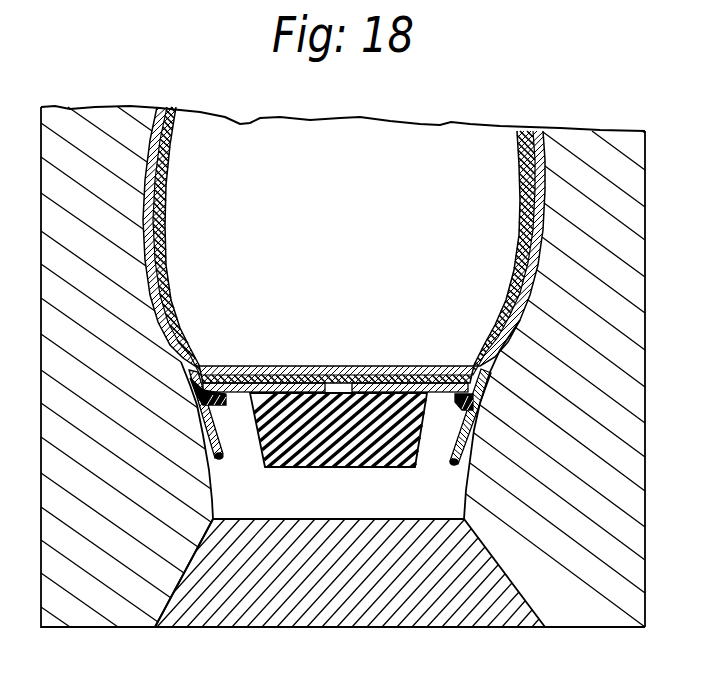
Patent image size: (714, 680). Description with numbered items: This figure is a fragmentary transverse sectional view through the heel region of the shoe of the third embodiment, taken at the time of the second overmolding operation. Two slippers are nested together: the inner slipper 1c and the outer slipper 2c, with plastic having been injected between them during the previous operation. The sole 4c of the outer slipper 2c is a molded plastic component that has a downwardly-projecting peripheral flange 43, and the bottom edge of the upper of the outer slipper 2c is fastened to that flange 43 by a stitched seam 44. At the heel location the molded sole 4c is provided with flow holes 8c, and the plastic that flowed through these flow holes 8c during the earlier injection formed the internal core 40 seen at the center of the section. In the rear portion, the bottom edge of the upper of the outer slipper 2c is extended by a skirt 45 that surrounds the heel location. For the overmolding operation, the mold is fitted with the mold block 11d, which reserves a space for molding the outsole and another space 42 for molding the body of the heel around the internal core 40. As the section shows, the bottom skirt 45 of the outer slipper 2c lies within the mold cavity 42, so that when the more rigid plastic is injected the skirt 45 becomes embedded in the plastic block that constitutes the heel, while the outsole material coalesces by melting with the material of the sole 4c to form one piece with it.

The outer slipper 2c is at (154, 146).
The inner slipper 1c is at (162, 218).
The flow holes 8c is at (330, 388).
The sole 4c is at (413, 389).
The internal core 40 is at (378, 413).
The space for molding the body of the heel 42 is at (430, 516).
The peripheral flange 43 is at (458, 407).
The stitched seam 44 is at (223, 401).
The extension (skirt) 45 is at (226, 457).
The mold block 11d is at (416, 612).